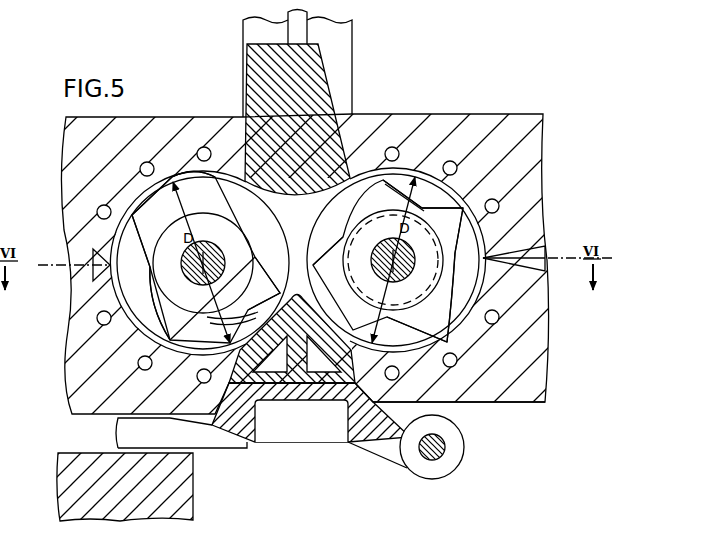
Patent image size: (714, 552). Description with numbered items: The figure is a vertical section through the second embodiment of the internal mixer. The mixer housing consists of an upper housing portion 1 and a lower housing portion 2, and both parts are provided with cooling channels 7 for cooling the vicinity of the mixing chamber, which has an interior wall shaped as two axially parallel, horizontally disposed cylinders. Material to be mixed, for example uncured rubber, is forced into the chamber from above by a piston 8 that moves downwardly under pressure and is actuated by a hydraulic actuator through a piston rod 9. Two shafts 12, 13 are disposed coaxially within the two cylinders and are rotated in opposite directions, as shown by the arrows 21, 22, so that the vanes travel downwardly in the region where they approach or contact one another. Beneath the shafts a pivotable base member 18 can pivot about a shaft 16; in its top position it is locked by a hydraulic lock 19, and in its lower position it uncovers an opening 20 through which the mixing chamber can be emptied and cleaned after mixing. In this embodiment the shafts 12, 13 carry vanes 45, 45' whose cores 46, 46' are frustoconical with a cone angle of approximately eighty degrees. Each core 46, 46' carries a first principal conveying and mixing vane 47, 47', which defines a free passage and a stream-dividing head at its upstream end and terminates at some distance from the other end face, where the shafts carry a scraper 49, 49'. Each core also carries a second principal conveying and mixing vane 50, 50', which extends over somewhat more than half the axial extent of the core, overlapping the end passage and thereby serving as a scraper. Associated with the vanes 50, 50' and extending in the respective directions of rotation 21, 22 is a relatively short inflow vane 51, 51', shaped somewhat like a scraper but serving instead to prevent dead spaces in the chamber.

The upper housing portion 1 is at (533, 128).
The lower housing portion 2 is at (536, 382).
The cooling channels 7 is at (496, 203).
The piston 8 is at (262, 76).
The piston rod 9 is at (295, 31).
The shaft 12 is at (380, 262).
The shaft 13 is at (217, 262).
The shaft 16 is at (440, 455).
The pivotable base member 18 is at (296, 365).
The hydraulic lock 19 is at (205, 441).
The opening 20 is at (348, 365).
The direction of rotation 21 is at (365, 242).
The direction of rotation 22 is at (228, 240).
The vane 45 is at (517, 231).
The vane 45' is at (81, 252).
The core 46 is at (513, 297).
The core 46' is at (91, 303).
The first principal conveying and mixing vane 47 is at (328, 259).
The first principal conveying and mixing vane 47' is at (193, 186).
The scraper 49 is at (379, 194).
The scraper 49' is at (92, 258).
The second principal conveying and mixing vane 50 is at (442, 212).
The second principal conveying and mixing vane 50' is at (164, 303).
The inflow vane 51 is at (421, 320).
The inflow vane 51' is at (263, 283).